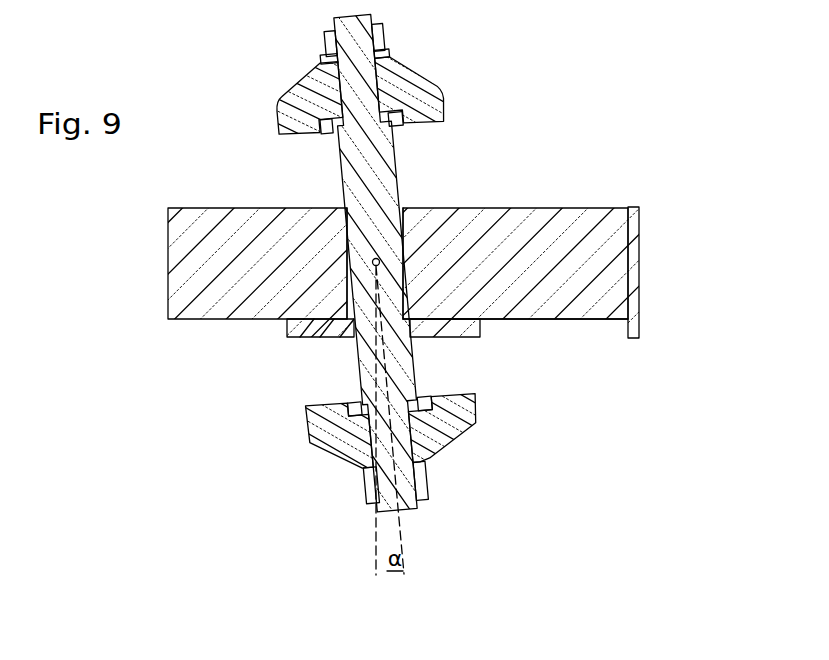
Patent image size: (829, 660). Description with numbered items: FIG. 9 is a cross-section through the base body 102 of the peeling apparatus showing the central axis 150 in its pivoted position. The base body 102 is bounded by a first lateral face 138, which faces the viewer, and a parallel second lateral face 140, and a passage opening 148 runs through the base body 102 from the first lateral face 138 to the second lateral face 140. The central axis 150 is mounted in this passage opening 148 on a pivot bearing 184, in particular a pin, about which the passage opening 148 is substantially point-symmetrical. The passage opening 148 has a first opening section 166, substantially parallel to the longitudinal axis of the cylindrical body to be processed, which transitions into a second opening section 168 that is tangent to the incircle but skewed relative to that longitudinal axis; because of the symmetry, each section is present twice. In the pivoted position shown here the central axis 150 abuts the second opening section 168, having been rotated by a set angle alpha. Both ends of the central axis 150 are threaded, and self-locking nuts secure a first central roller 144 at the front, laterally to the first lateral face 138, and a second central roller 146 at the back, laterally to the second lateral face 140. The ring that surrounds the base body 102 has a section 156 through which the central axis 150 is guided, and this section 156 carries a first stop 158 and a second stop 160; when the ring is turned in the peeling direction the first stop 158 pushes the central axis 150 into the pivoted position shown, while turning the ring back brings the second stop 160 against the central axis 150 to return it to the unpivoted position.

The base body 102 is at (222, 252).
The first lateral face 138 is at (597, 319).
The second lateral face 140 is at (611, 207).
The first central roller 144 is at (330, 420).
The second central roller 146 is at (432, 95).
The passage opening 148 is at (342, 193).
The central axis 150 is at (393, 162).
The section 156 is at (289, 327).
The first stop 158 is at (362, 338).
The second stop 160 is at (414, 326).
The first opening section 166 is at (421, 226).
The second opening section 168 is at (408, 299).
The pivot bearing 184 is at (372, 262).